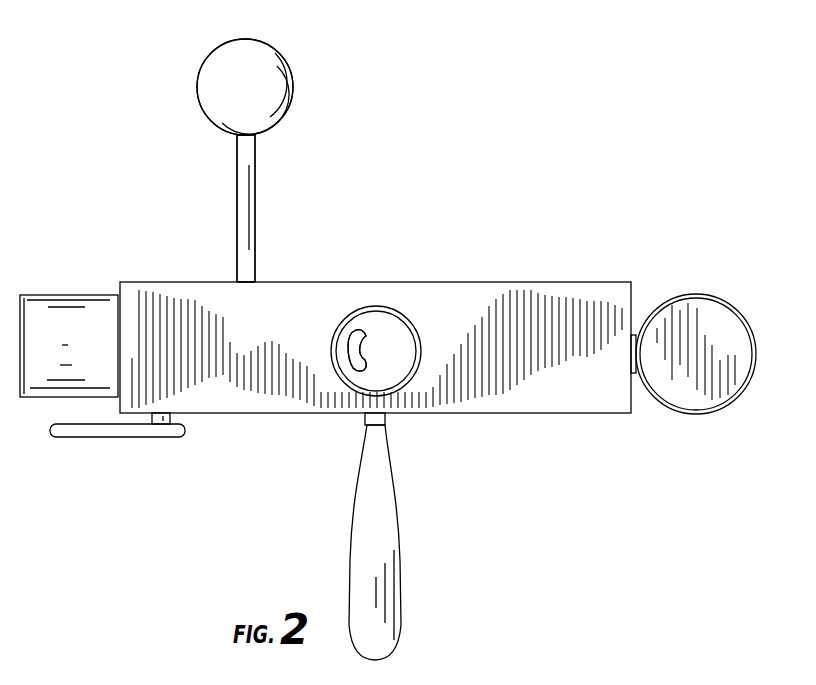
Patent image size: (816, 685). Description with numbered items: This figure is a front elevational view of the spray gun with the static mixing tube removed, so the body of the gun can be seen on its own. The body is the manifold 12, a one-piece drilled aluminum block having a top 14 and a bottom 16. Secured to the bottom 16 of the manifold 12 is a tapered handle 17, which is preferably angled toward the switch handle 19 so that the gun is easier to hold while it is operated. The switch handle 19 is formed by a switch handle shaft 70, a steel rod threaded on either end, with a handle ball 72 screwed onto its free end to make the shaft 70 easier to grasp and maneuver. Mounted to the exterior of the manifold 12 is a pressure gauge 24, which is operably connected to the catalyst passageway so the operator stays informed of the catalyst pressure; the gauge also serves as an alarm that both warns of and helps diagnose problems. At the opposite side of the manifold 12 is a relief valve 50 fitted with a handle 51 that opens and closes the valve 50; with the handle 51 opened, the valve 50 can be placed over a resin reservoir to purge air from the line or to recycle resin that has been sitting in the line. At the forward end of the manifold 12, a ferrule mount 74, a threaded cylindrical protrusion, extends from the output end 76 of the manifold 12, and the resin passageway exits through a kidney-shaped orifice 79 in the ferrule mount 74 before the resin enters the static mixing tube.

The manifold 12 is at (305, 495).
The top 14 is at (211, 282).
The bottom 16 is at (258, 415).
The tapered handle 17 is at (396, 573).
The switch handle 19 is at (215, 158).
The pressure gauge 24 is at (692, 298).
The relief valve 50 is at (38, 297).
The handle 51 is at (107, 434).
The switch handle shaft 70 is at (257, 214).
The handle ball 72 is at (212, 82).
The ferrule mount 74 is at (395, 306).
The output end 76 is at (378, 323).
The kidney-shaped orifice 79 is at (350, 365).